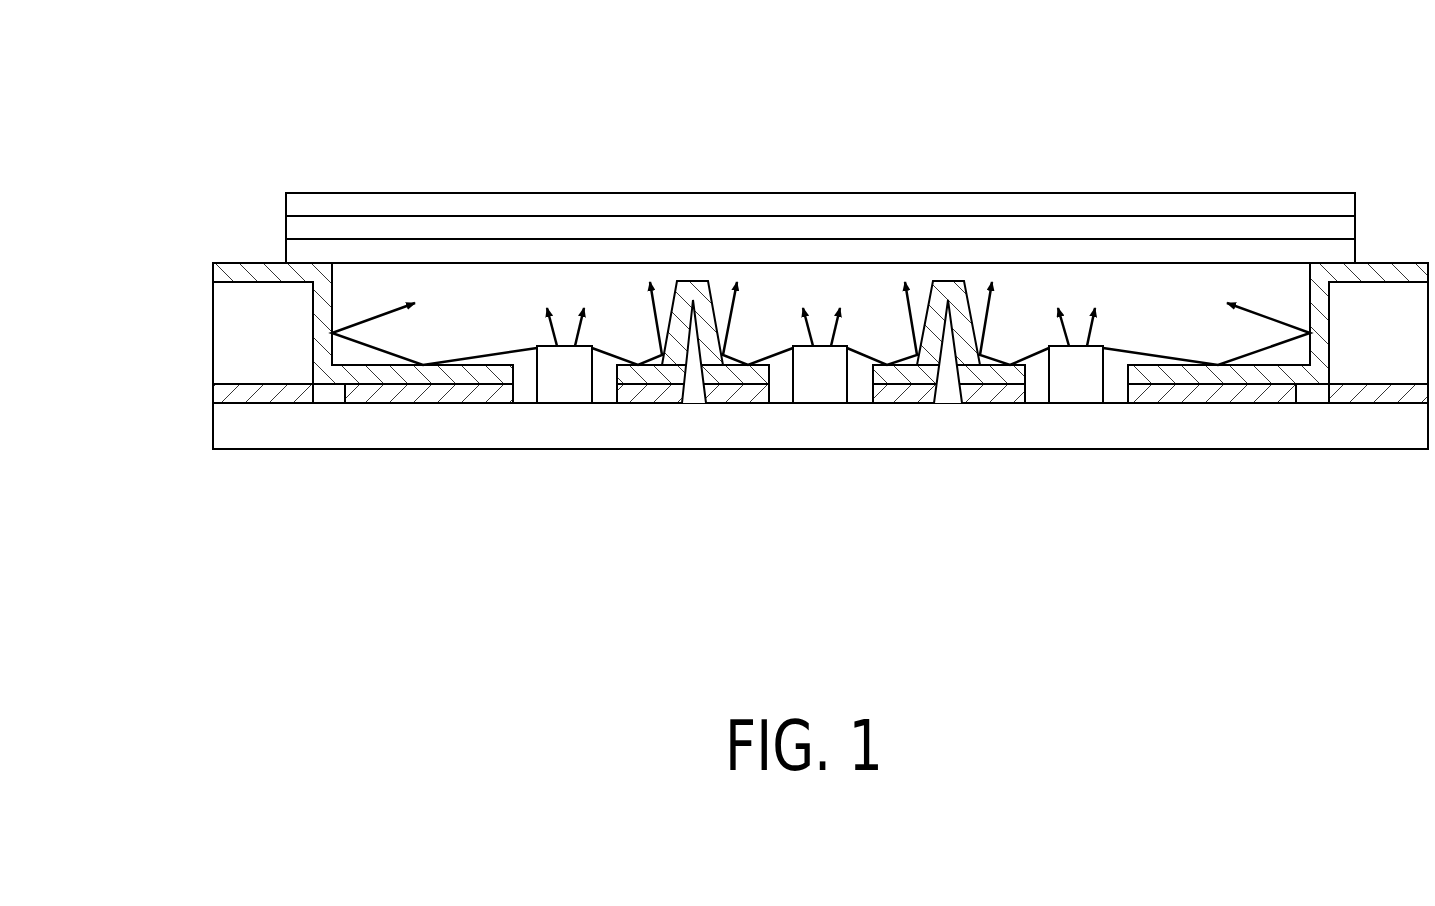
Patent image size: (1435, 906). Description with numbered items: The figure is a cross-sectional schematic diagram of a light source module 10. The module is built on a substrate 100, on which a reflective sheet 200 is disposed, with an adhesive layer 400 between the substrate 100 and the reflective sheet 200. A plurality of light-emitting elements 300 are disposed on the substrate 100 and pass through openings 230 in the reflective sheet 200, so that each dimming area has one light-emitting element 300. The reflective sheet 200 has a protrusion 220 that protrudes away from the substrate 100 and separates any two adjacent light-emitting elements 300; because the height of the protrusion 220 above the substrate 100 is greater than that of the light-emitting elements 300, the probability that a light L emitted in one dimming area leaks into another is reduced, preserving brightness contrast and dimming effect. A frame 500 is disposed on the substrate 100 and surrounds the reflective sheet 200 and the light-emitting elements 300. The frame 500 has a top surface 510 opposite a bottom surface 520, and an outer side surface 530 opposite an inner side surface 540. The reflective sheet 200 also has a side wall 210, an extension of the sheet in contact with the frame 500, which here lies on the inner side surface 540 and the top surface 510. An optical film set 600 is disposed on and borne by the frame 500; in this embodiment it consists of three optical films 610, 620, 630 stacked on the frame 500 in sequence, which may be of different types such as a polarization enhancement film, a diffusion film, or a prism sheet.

The light source module 10 is at (203, 77).
The substrate 100 is at (467, 425).
The reflective sheet 200 is at (391, 373).
The side wall 210 is at (327, 303).
The protrusion 220 is at (695, 278).
The openings 230 is at (527, 385).
The light-emitting elements 300 is at (567, 382).
The adhesive layer 400 is at (650, 392).
The frame 500 is at (766, 385).
The top surface 510 is at (246, 283).
The bottom surface 520 is at (246, 384).
The outer side surface 530 is at (211, 323).
The inner side surface 540 is at (309, 350).
The optical film set 600 is at (820, 168).
The optical film 610 is at (770, 123).
The optical film 620 is at (855, 227).
The optical film 630 is at (802, 208).
The light L is at (777, 357).